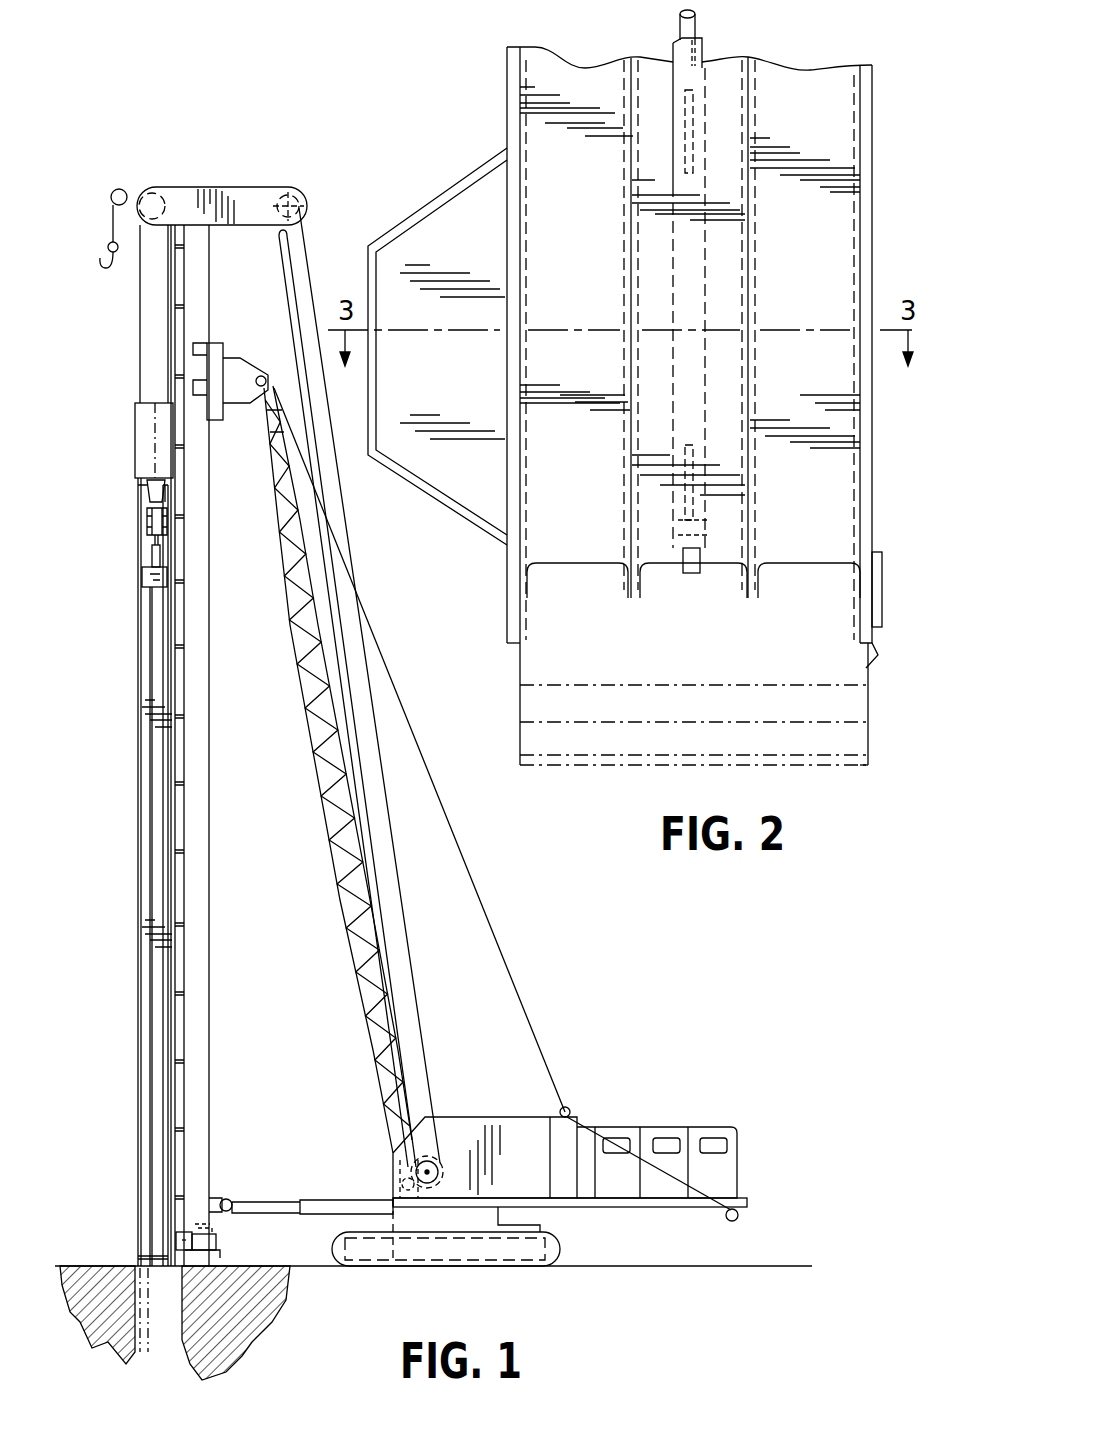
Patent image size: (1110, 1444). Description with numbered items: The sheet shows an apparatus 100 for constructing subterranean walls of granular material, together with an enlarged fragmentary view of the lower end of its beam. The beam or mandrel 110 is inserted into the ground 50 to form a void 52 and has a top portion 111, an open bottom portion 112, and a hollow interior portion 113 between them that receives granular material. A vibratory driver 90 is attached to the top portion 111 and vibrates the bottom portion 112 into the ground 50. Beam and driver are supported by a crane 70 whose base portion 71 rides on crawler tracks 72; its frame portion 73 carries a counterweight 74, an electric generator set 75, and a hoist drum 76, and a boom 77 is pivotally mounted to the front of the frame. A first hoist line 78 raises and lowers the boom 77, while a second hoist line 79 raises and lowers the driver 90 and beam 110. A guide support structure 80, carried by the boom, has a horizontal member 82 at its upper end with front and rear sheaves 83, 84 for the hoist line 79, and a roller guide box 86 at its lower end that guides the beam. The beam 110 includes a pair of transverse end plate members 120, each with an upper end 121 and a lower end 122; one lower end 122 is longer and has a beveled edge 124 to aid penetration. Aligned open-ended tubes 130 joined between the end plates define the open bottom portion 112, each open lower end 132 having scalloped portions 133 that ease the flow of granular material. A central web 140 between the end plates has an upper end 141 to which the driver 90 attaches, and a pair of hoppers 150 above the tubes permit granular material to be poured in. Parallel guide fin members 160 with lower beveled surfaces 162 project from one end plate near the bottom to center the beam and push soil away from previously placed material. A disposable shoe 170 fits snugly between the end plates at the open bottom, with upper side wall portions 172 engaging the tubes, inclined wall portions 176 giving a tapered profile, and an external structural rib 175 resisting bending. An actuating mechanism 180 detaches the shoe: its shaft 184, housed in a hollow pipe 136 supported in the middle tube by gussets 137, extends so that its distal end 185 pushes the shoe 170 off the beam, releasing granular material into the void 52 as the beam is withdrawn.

In FIG. 1, the ground 50 is at (252, 1298).
In FIG. 1, the void 52 is at (190, 1350).
In FIG. 1, the crane 70 is at (720, 1080).
In FIG. 1, the base portion 71 is at (400, 1222).
In FIG. 1, the crawler tracks 72 is at (560, 1252).
In FIG. 1, the frame portion 73 is at (748, 1203).
In FIG. 1, the counterweight 74 is at (568, 1138).
In FIG. 1, the electric generator set 75 is at (740, 1140).
In FIG. 1, the hoist drum 76 is at (452, 1158).
In FIG. 1, the boom 77 is at (330, 848).
In FIG. 1, the first hoist line 78 is at (492, 932).
In FIG. 1, the second hoist line 79 is at (140, 300).
In FIG. 1, the guide support structure 80 is at (210, 940).
In FIG. 1, the horizontal member 82 is at (232, 190).
In FIG. 1, the front sheave 83 is at (142, 190).
In FIG. 1, the rear sheave 84 is at (292, 194).
In FIG. 1, the roller guide box 86 is at (222, 1214).
In FIG. 1, the vibratory driver 90 is at (135, 410).
In FIG. 1, the apparatus 100 is at (133, 478).
In FIG. 1, the beam 110 is at (140, 744).
In FIG. 2, the beam 110 is at (488, 80).
In FIG. 1, the top portion 111 is at (147, 512).
In FIG. 1, the open bottom portion 112 is at (160, 1240).
In FIG. 2, the open bottom portion 112 is at (512, 592).
In FIG. 1, the hollow interior portion 113 is at (150, 940).
In FIG. 1, the transverse end plate member 120 is at (138, 656).
In FIG. 2, the transverse end plate member 120 is at (508, 135).
In FIG. 1, the upper end 121 is at (146, 492).
In FIG. 1, the lower end 122 is at (142, 1257).
In FIG. 2, the lower end 122 is at (506, 645).
In FIG. 2, the beveled edge 124 is at (870, 668).
In FIG. 2, the tube 130 is at (690, 291).
In FIG. 2, the open lower end 132 is at (800, 560).
In FIG. 2, the scalloped portion 133 is at (570, 572).
In FIG. 1, the hollow pipe 136 is at (153, 553).
In FIG. 2, the hollow pipe 136 is at (672, 48).
In FIG. 2, the gusset 137 is at (700, 125).
In FIG. 1, the central web 140 is at (150, 528).
In FIG. 1, the upper end 141 is at (167, 494).
In FIG. 1, the hopper 150 is at (172, 583).
In FIG. 1, the guide fin member 160 is at (150, 1238).
In FIG. 2, the guide fin member 160 is at (590, 327).
In FIG. 2, the lower beveled surface 162 is at (425, 488).
In FIG. 2, the disposable shoe 170 is at (582, 768).
In FIG. 2, the upper side wall portion 172 is at (550, 708).
In FIG. 2, the external structural rib 175 is at (805, 770).
In FIG. 2, the inclined wall portion 176 is at (545, 745).
In FIG. 1, the actuating mechanism 180 is at (160, 528).
In FIG. 2, the shaft 184 is at (698, 30).
In FIG. 2, the distal end 185 is at (690, 578).